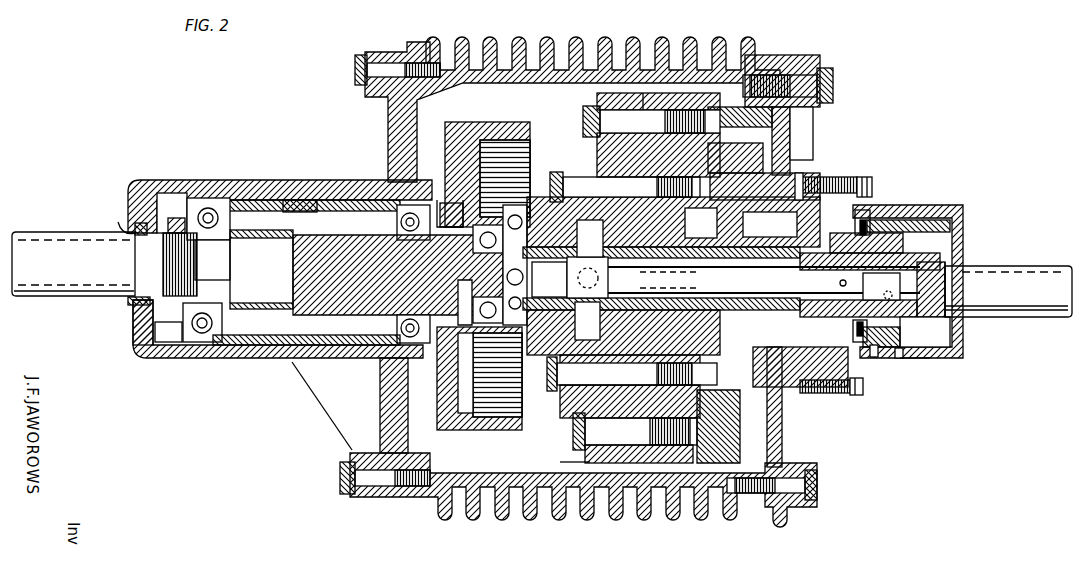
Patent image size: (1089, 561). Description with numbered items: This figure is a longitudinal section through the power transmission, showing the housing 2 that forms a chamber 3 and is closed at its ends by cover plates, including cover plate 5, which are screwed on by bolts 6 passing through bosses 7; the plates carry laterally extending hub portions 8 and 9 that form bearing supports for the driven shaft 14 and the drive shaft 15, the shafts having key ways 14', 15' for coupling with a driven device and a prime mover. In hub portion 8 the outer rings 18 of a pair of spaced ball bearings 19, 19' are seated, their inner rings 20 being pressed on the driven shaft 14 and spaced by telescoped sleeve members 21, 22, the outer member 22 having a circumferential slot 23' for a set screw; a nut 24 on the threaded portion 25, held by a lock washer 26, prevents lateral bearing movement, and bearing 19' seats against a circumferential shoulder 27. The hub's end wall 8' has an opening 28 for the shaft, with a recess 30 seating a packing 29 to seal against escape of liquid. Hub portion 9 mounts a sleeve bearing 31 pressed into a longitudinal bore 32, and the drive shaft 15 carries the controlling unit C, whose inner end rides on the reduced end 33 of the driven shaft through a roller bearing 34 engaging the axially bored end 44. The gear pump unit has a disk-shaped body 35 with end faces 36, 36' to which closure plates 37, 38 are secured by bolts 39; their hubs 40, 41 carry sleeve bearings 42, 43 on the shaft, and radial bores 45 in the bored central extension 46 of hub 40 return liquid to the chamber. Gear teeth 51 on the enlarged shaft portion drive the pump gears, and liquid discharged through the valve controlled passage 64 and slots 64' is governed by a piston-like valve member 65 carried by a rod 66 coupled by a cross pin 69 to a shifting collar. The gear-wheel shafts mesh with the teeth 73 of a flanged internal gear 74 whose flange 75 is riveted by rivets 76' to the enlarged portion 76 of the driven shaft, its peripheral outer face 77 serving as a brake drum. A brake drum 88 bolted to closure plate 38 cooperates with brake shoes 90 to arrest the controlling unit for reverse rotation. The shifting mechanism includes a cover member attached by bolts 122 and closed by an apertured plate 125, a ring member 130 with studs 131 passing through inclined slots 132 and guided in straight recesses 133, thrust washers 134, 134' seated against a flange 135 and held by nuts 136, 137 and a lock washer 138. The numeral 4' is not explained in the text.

The housing 2 is at (582, 492).
The chamber 3 is at (552, 92).
The housing web 4' is at (350, 405).
The cover plate 5 is at (782, 428).
The bolts 6 is at (360, 85).
The bosses 7 is at (386, 55).
The hub portion 8 is at (278, 346).
The end wall 8' is at (120, 322).
The hub portion 9 is at (806, 390).
The driven shaft 14 is at (73, 278).
The key way 14' is at (74, 217).
The drive shaft 15 is at (1008, 307).
The key way 15' is at (1012, 252).
The outer rings 18 is at (200, 196).
The ball bearing 19 is at (202, 345).
The ball bearing 19' is at (306, 361).
The inner rings 20 is at (206, 232).
The inner sleeve member 21 is at (262, 240).
The outer sleeve member 22 is at (258, 200).
The circumferential slot 23' is at (320, 152).
The nut 24 is at (168, 332).
The threaded portion 25 is at (197, 268).
The lock washer 26 is at (172, 213).
The circumferential shoulder 27 is at (432, 183).
The opening 28 is at (113, 222).
The packing 29 is at (141, 236).
The recess 30 is at (140, 296).
The sleeve bearing 31 is at (780, 250).
The longitudinal bore 32 is at (830, 280).
The reduced end 33 is at (462, 322).
The roller bearing 34 is at (508, 228).
The disk-shaped body 35 is at (642, 93).
The end face 36 is at (645, 102).
The end face 36' is at (730, 105).
The closure plate 37 is at (598, 146).
The closure plate 38 is at (735, 158).
The bolts 39 is at (585, 120).
The hub 40 is at (560, 405).
The hub 41 is at (722, 426).
The sleeve bearing 42 is at (549, 279).
The sleeve bearing 43 is at (674, 280).
The bored end 44 is at (548, 245).
The radial bores 45 is at (520, 337).
The bored central extension 46 is at (515, 350).
The gear teeth 51 is at (670, 228).
The valve controlled passage 64 is at (625, 214).
The slots 64' is at (587, 321).
The valve member 65 is at (610, 280).
The rod 66 is at (910, 258).
The cross pin 69 is at (870, 286).
The teeth 73 is at (502, 420).
The internal gear 74 is at (467, 432).
The flange 75 is at (447, 160).
The enlarged portion 76 is at (382, 275).
The rivets 76' is at (396, 329).
The peripheral outer face 77 is at (494, 124).
The brake drum 88 is at (801, 133).
The brake shoe 90 is at (790, 140).
The bolts 122 is at (870, 176).
The apertured plate 125 is at (955, 340).
The ring member 130 is at (880, 222).
The studs 131 is at (872, 214).
The inclined slots 132 is at (906, 326).
The straight recesses 133 is at (932, 218).
The thrust washer 134 is at (828, 268).
The thrust washer 134' is at (884, 203).
The flange 135 is at (818, 175).
The nut 136 is at (878, 360).
The nut 137 is at (905, 360).
The lock washer 138 is at (911, 384).
The controlling unit C is at (583, 458).